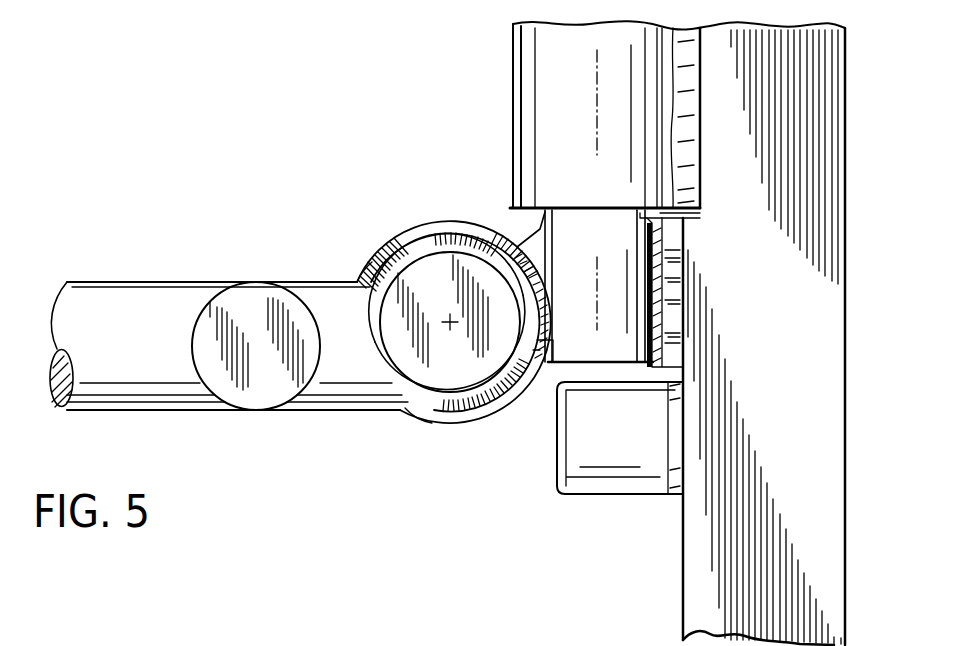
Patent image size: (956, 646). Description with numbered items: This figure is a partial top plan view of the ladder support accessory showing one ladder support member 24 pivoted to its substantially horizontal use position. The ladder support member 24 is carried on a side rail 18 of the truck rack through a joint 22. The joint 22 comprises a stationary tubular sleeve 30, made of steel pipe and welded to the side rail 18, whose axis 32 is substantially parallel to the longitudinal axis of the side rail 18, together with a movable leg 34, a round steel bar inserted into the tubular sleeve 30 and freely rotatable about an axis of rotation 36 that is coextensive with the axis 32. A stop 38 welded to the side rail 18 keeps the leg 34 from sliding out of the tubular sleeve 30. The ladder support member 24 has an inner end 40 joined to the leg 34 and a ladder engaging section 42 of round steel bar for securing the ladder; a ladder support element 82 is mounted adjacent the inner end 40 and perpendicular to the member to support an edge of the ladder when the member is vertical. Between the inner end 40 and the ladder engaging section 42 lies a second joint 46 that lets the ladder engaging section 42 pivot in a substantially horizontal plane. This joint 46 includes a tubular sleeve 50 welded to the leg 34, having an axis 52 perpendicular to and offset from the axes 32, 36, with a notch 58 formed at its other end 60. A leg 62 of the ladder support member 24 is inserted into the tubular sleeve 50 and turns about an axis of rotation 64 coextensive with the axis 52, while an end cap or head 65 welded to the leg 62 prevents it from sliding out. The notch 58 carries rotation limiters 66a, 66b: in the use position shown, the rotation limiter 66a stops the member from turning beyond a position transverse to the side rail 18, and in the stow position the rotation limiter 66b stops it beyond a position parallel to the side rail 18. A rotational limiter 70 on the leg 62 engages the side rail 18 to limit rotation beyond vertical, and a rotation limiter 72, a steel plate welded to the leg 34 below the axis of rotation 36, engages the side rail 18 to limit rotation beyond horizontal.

The side rail 18 is at (682, 600).
The joint 22 is at (492, 149).
The ladder support member 24 is at (313, 447).
The tubular sleeve 30 is at (512, 76).
The axis 32 is at (596, 118).
The leg 34 is at (680, 221).
The axis of rotation 36 is at (592, 314).
The stop 38 is at (600, 494).
The inner end 40 is at (540, 378).
The ladder engaging section 42 is at (147, 290).
The joint 46 is at (446, 430).
The tubular sleeve 50 is at (380, 243).
The axis 52 is at (445, 312).
The notch 58 is at (435, 401).
The other end 60 is at (522, 284).
The leg 62 is at (392, 370).
The axis of rotation 64 is at (455, 296).
The end cap or head 65 is at (360, 268).
The rotation limiter 66a is at (368, 288).
The rotation limiter 66b is at (498, 368).
The rotational limiter 70 is at (477, 236).
The rotation limiter 72 is at (673, 314).
The ladder support element 82 is at (214, 300).